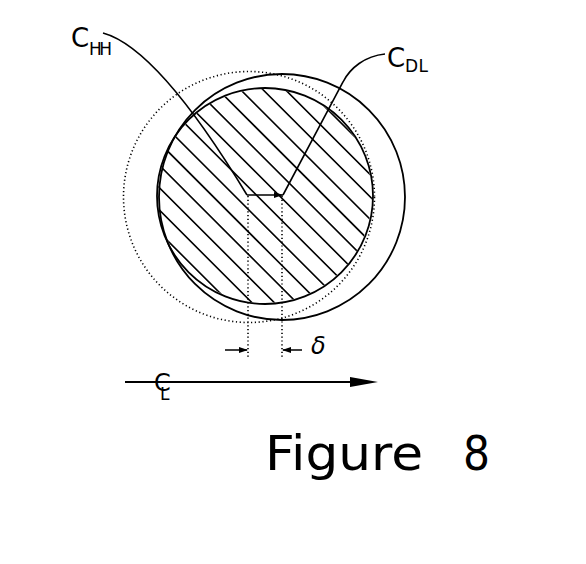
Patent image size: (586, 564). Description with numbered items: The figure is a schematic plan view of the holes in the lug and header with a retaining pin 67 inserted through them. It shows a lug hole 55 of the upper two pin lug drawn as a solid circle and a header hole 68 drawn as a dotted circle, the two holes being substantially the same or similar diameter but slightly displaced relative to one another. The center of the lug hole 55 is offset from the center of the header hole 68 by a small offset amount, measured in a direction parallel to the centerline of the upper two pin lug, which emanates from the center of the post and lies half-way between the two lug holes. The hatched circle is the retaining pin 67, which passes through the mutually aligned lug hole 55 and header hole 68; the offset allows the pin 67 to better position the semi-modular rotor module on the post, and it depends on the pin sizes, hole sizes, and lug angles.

The lug hole 55 is at (402, 155).
The retaining pin 67 is at (267, 88).
The header hole 68 is at (128, 157).